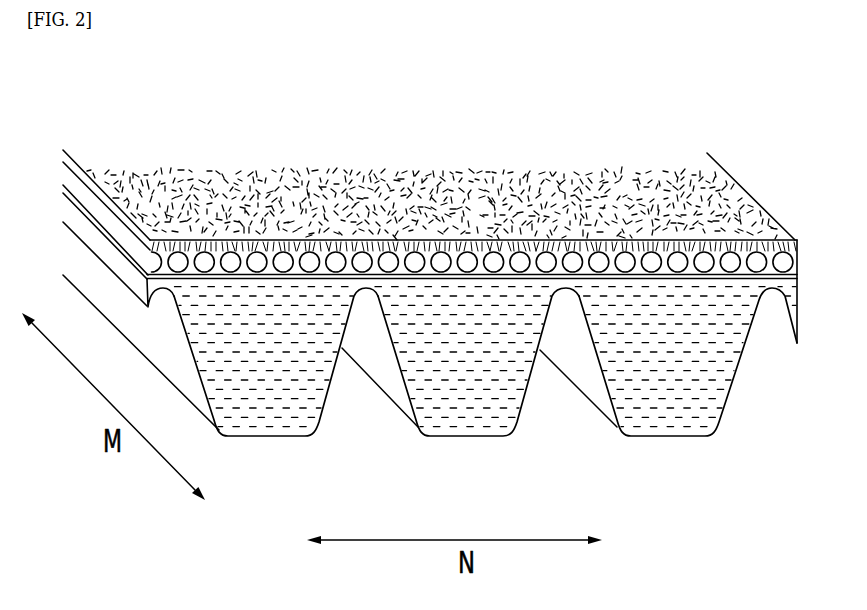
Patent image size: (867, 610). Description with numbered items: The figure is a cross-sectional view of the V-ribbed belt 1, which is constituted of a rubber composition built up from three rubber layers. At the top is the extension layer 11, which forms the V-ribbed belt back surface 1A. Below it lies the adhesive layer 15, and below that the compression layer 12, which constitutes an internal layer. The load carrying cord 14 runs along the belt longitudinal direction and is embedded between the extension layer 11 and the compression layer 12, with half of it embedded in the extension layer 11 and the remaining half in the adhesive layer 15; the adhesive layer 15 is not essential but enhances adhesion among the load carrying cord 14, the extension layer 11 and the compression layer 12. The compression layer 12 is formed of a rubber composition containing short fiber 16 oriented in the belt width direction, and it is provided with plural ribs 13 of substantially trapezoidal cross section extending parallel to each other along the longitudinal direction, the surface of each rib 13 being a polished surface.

The V-ribbed belt 1 is at (366, 152).
The V-ribbed belt back surface 1A is at (627, 210).
The extension layer 11 is at (803, 240).
The compression layer 12 is at (803, 273).
The rib 13 is at (273, 437).
The load carrying cord 14 is at (755, 250).
The adhesive layer 15 is at (803, 253).
The short fiber 16 is at (485, 418).